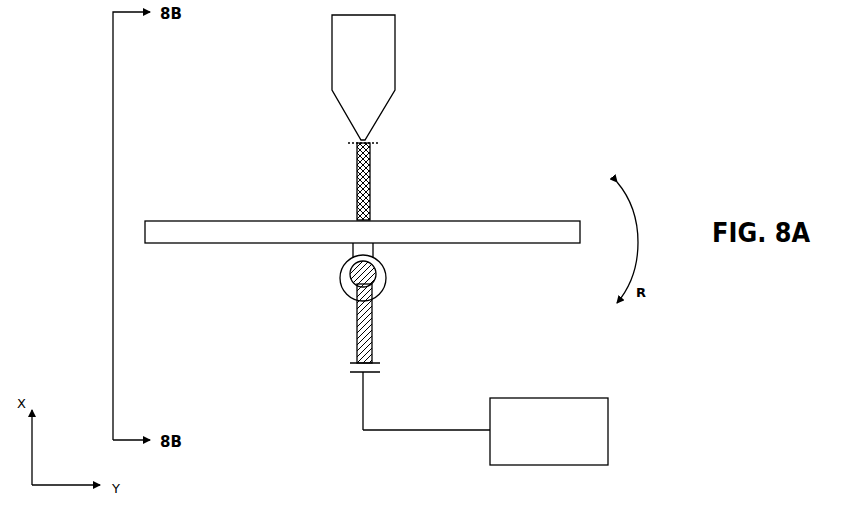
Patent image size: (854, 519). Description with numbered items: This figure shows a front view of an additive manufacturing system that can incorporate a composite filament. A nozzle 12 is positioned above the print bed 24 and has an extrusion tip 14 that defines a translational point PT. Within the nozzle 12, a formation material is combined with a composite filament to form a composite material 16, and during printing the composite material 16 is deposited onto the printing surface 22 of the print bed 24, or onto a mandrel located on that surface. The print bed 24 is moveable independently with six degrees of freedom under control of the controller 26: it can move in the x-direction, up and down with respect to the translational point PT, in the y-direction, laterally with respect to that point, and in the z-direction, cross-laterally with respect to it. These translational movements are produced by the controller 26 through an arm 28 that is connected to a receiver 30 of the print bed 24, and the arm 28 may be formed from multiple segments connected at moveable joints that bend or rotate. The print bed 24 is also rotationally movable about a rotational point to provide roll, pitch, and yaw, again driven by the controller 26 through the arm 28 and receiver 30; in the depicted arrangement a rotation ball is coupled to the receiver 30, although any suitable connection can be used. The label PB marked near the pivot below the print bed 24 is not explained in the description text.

The nozzle 12 is at (383, 33).
The extrusion tip 14 is at (368, 138).
The composite material 16 is at (372, 160).
The printing surface 22 is at (459, 216).
The print bed 24 is at (540, 232).
The controller 26 is at (485, 431).
The arm 28 is at (372, 318).
The receiver 30 is at (386, 272).
The translational point PT is at (355, 143).
The bottom point PB is at (345, 276).